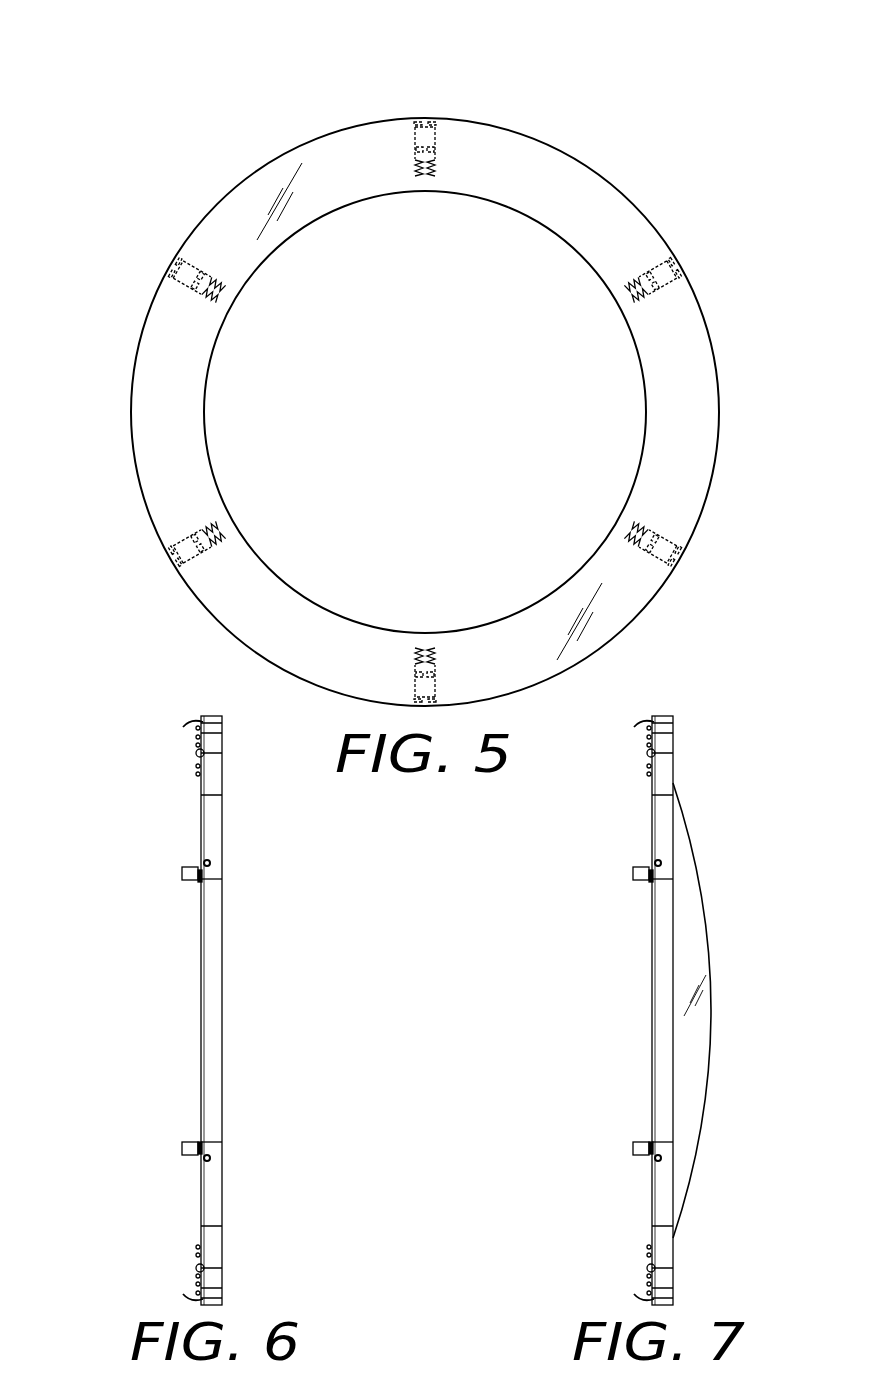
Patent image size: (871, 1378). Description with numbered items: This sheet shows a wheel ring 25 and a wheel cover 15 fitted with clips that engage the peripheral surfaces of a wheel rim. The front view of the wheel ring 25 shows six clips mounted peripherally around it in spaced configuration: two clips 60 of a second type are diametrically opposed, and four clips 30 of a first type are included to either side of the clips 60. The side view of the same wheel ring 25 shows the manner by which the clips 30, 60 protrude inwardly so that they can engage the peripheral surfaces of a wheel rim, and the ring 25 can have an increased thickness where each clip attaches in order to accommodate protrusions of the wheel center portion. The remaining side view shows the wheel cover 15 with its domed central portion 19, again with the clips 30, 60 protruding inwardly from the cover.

In FIG. 7, the wheel cover 15 is at (639, 1010).
In FIG. 7, the central portion 19 is at (702, 921).
In FIG. 5, the wheel ring 25 is at (197, 613).
In FIG. 6, the wheel ring 25 is at (193, 1073).
In FIG. 7, the wheel ring 25 is at (653, 1010).
In FIG. 5, the clips of a first type 30 is at (160, 260).
In FIG. 6, the clips of a first type 30 is at (122, 972).
In FIG. 7, the clips of a first type 30 is at (558, 985).
In FIG. 5, the clips of a second type 60 is at (448, 115).
In FIG. 6, the clips of a second type 60 is at (178, 860).
In FIG. 7, the clips of a second type 60 is at (628, 860).